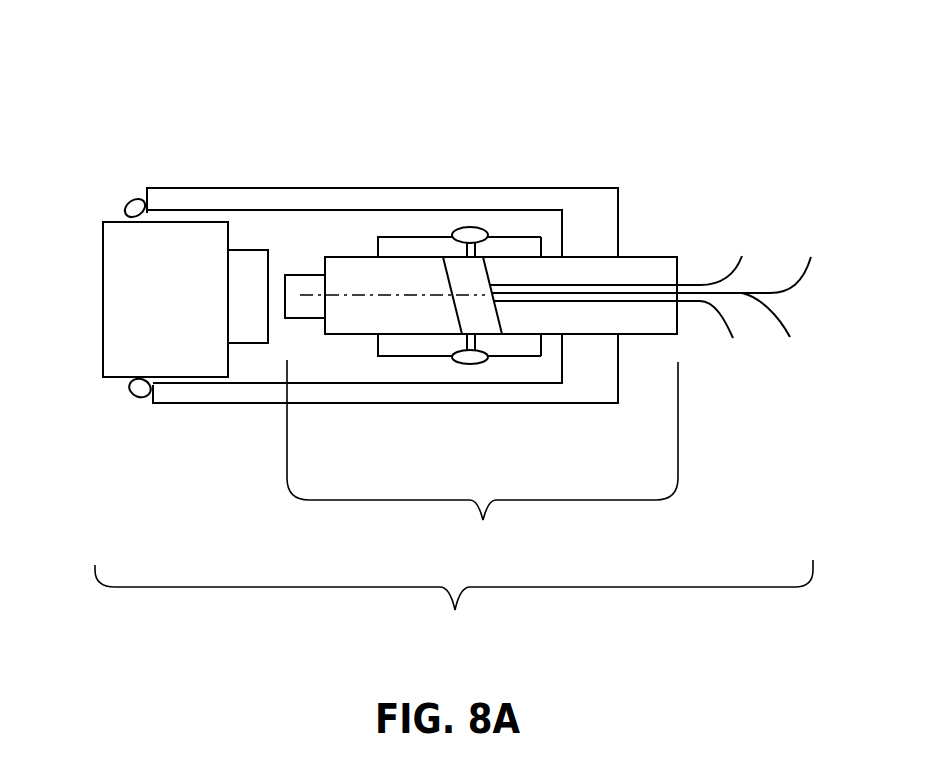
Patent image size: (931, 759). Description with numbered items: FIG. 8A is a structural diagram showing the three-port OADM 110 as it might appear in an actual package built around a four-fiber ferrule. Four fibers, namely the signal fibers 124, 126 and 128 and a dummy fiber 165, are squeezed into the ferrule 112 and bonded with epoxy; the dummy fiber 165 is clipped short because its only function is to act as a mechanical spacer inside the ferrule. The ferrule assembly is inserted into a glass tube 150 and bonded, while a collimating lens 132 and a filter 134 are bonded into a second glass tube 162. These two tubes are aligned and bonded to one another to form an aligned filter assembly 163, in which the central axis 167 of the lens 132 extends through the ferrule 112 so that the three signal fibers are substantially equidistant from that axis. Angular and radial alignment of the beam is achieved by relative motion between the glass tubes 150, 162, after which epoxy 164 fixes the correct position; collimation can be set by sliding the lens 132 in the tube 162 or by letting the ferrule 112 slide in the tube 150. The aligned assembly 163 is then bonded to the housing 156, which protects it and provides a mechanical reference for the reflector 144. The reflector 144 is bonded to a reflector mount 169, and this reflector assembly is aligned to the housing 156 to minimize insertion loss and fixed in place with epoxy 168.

The OADM 110 is at (454, 417).
The ferrule 112 is at (642, 245).
The fiber 124 is at (730, 362).
The fiber 126 is at (742, 247).
The fiber 128 is at (811, 257).
The collimating lens 132 is at (345, 248).
The filter 134 is at (285, 322).
The reflector 144 is at (255, 247).
The glass tube 150 is at (521, 363).
The housing 156 is at (592, 178).
The second glass tube 162 is at (396, 363).
The aligned filter assembly 163 is at (482, 457).
The epoxy 164 is at (475, 220).
The dummy fiber 165 is at (788, 348).
The central axis 167 is at (383, 290).
The epoxy 168 is at (127, 400).
The reflector mount 169 is at (94, 262).